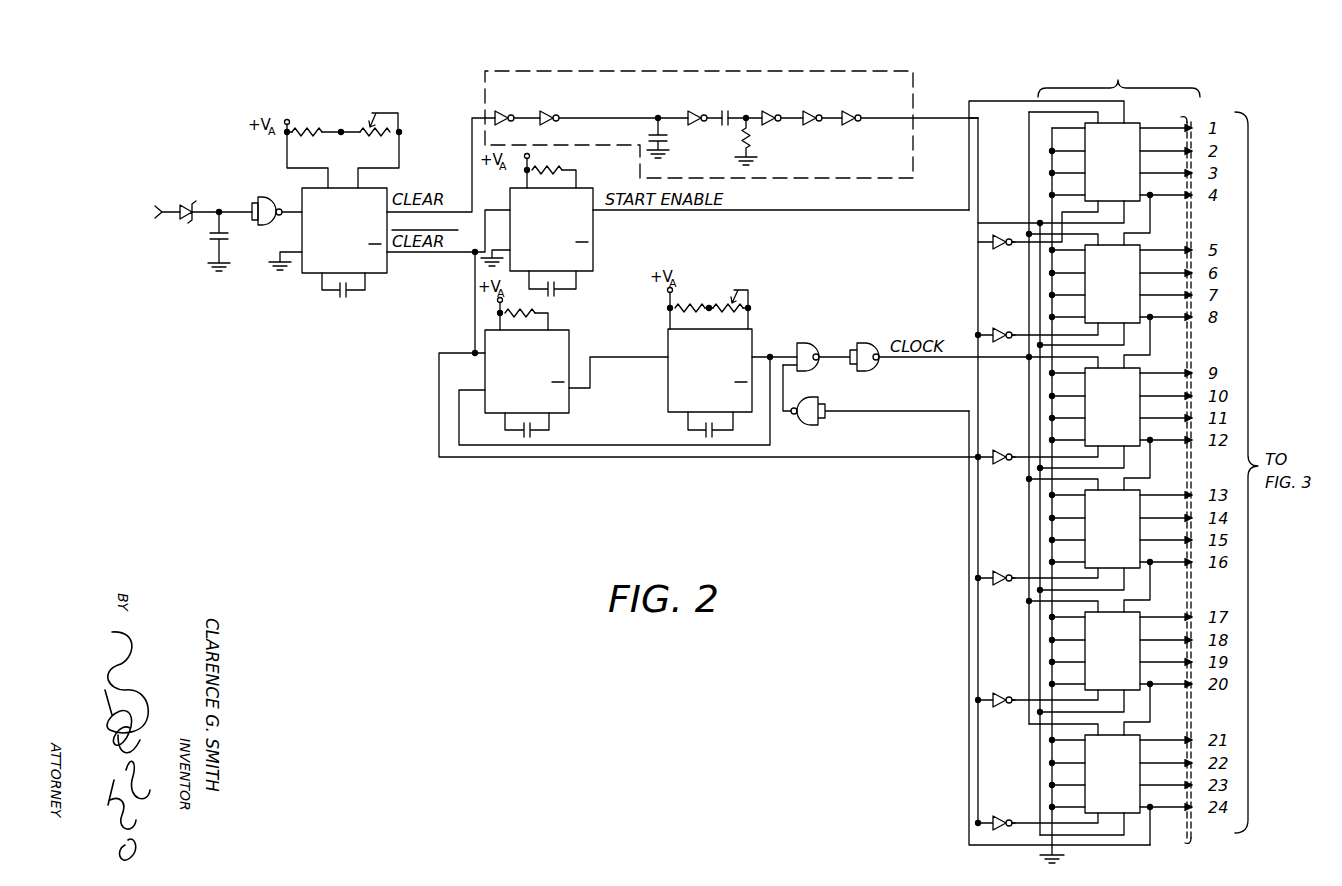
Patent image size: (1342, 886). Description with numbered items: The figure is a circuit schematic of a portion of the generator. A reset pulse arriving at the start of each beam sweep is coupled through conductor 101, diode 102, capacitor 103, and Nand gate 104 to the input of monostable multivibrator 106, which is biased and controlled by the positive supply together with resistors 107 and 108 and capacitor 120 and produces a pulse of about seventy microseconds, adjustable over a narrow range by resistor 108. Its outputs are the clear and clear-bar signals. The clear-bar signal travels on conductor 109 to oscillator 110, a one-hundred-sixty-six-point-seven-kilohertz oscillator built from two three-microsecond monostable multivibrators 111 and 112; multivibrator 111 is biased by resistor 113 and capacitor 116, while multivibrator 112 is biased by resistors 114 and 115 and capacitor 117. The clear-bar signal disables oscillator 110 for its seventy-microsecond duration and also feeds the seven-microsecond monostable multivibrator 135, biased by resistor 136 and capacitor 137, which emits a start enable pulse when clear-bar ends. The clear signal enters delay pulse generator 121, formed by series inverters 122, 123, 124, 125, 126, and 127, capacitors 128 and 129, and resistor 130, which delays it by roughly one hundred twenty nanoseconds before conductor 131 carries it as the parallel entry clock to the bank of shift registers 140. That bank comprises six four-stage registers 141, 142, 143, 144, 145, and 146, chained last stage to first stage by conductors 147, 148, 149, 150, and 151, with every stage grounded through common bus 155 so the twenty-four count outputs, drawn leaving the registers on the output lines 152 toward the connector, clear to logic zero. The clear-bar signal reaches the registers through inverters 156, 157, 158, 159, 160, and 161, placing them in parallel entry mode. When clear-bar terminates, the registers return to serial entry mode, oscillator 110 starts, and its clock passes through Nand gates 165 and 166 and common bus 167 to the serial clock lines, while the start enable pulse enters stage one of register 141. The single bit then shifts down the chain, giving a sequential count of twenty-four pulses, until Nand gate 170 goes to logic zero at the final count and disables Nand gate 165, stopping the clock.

The conductor 101 is at (176, 208).
The diode 102 is at (194, 209).
The capacitor 103 is at (208, 240).
The Nand gate 104 is at (262, 227).
The monostable multivibrator 106 is at (392, 187).
The resistor 107 is at (308, 128).
The resistor 108 is at (388, 112).
The conductor 109 is at (475, 308).
The oscillator 110 is at (652, 320).
The monostable multivibrator 111 is at (572, 347).
The monostable multivibrator 112 is at (753, 343).
The resistor 113 is at (537, 307).
The resistor 114 is at (694, 303).
The resistor 115 is at (749, 290).
The capacitor 116 is at (535, 438).
The capacitor 117 is at (690, 438).
The capacitor 120 is at (341, 300).
The delay pulse generator 121 is at (713, 56).
The inverter 122 is at (507, 100).
The inverter 123 is at (551, 110).
The inverter 124 is at (689, 113).
The inverter 125 is at (768, 110).
The inverter 126 is at (822, 127).
The inverter 127 is at (858, 110).
The capacitor 128 is at (668, 143).
The capacitor 129 is at (723, 110).
The resistor 130 is at (752, 143).
The conductor 131 is at (922, 117).
The monostable multivibrator 135 is at (595, 237).
The resistor 136 is at (560, 166).
The capacitor 137 is at (560, 295).
The shift registers 140 is at (1102, 74).
The register 141 is at (1098, 179).
The register 142 is at (1098, 301).
The register 143 is at (1098, 424).
The register 144 is at (1098, 546).
The register 145 is at (1098, 668).
The register 146 is at (1098, 791).
The conductor 147 is at (1151, 205).
The conductor 148 is at (1151, 337).
The conductor 149 is at (1151, 460).
The conductor 150 is at (1151, 582).
The conductor 151 is at (1151, 705).
The output lines 152 is at (1184, 118).
The common bus 155 is at (1042, 847).
The inverter 156 is at (998, 250).
The inverter 157 is at (1000, 328).
The inverter 158 is at (1002, 450).
The inverter 159 is at (1002, 571).
The inverter 160 is at (1002, 693).
The inverter 161 is at (1002, 816).
The Nand gate 165 is at (816, 345).
The Nand gate 166 is at (877, 368).
The common bus 167 is at (1027, 147).
The Nand gate 170 is at (821, 421).